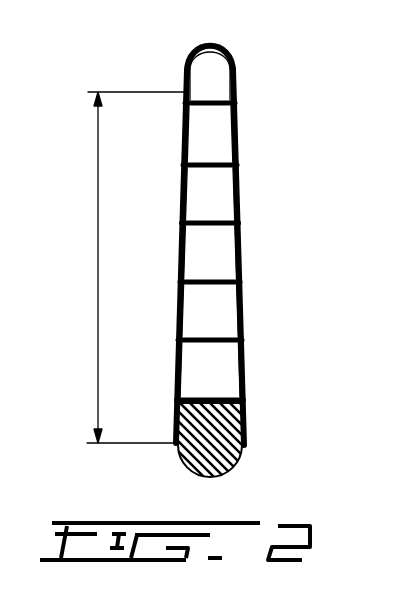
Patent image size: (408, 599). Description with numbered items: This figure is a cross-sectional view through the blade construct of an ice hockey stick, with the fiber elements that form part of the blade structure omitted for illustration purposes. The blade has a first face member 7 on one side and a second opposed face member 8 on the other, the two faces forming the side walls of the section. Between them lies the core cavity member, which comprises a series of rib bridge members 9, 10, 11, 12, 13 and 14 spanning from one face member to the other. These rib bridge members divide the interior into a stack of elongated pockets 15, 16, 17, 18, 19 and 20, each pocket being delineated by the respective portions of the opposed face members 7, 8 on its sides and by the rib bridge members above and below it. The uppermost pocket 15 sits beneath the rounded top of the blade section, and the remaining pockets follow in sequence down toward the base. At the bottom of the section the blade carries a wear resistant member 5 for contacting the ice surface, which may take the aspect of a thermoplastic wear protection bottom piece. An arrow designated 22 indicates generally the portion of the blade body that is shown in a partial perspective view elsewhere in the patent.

The wear resistant member 5 is at (236, 466).
The first face member 7 is at (240, 190).
The second opposed face member 8 is at (180, 137).
The rib bridge member 9 is at (237, 93).
The rib bridge member 10 is at (237, 160).
The rib bridge member 11 is at (238, 218).
The rib bridge member 12 is at (240, 275).
The rib bridge member 13 is at (240, 335).
The rib bridge member 14 is at (240, 395).
The elongated pocket 15 is at (213, 62).
The elongated pocket 16 is at (237, 145).
The elongated pocket 17 is at (183, 196).
The elongated pocket 18 is at (183, 253).
The elongated pocket 19 is at (181, 312).
The elongated pocket 20 is at (178, 372).
The arrow indicating portion of the blade body 22 is at (97, 262).